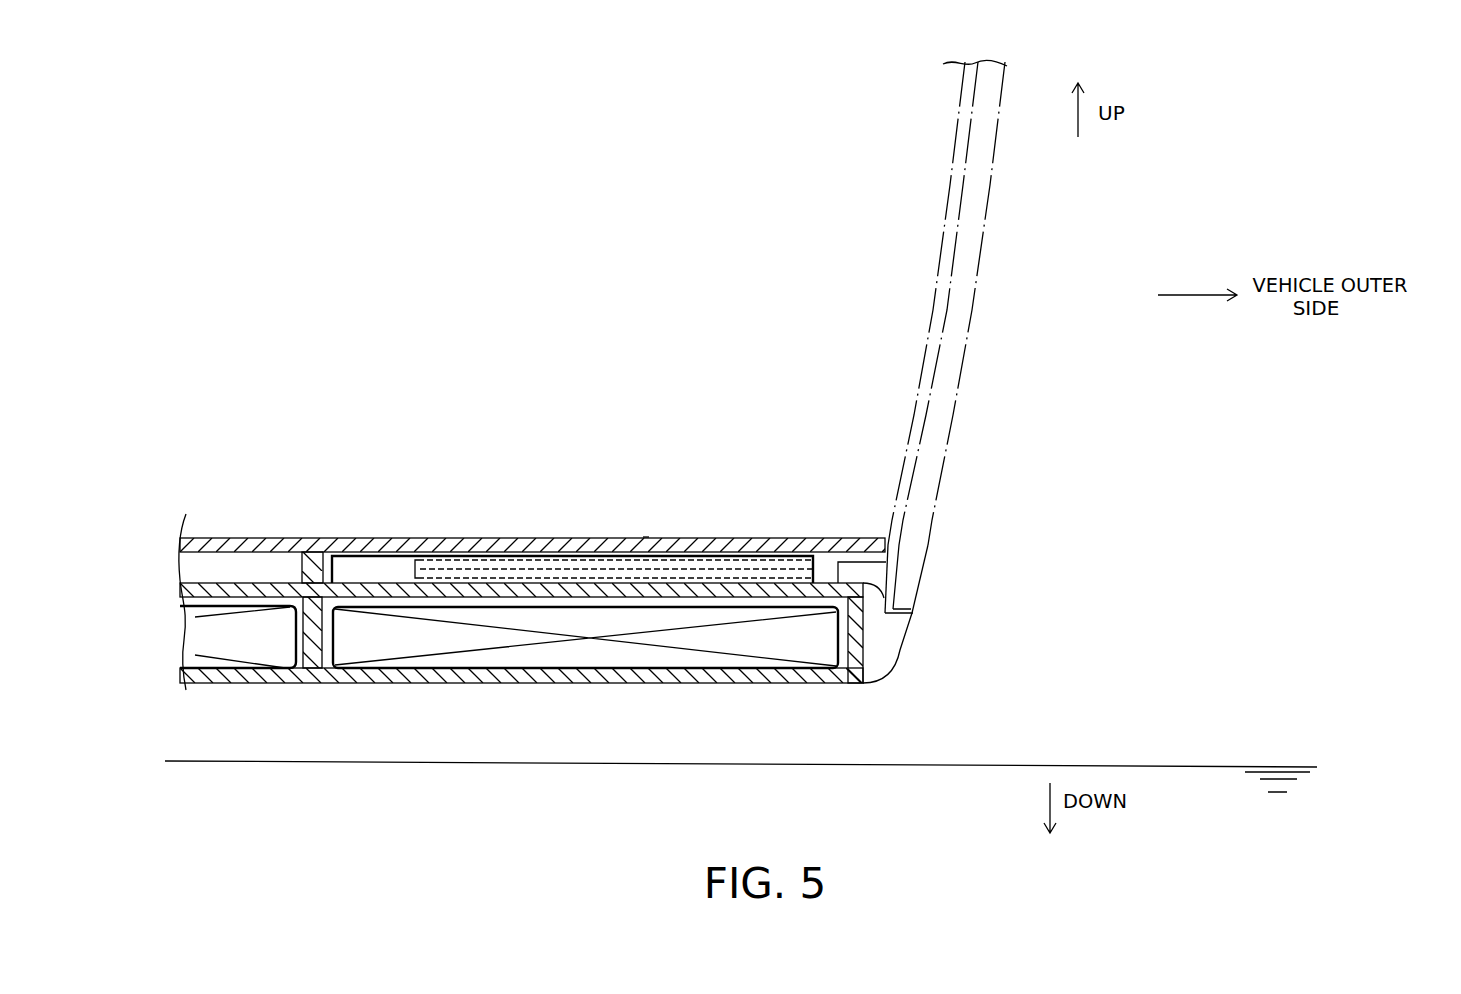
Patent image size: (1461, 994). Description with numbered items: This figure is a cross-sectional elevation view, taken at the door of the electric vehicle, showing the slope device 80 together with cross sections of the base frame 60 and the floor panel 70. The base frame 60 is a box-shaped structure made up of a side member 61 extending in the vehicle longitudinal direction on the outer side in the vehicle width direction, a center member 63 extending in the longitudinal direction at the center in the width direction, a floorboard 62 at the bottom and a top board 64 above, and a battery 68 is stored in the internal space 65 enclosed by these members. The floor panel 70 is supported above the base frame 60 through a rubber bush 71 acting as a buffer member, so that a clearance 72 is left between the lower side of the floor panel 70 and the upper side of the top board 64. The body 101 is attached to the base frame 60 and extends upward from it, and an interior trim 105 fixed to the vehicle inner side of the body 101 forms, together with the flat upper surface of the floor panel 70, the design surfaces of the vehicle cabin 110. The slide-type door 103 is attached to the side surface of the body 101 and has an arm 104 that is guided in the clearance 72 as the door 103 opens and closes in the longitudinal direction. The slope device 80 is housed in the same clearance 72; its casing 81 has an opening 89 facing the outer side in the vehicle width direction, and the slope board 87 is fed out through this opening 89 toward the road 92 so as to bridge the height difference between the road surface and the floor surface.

The vehicle cabin 110 is at (476, 198).
The base frame 60 is at (577, 694).
The side member 61 is at (837, 683).
The floorboard 62 is at (708, 683).
The center member 63 is at (316, 683).
The top board 64 is at (470, 596).
The internal space 65 is at (623, 602).
The battery 68 is at (337, 683).
The floor panel 70 is at (408, 523).
The rubber bush 71 is at (303, 567).
The clearance 72 is at (363, 538).
The slope device 80 is at (418, 557).
The casing 81 is at (613, 569).
The slope board 87 is at (646, 540).
The opening 89 is at (837, 562).
The road 92 is at (1143, 767).
The body 101 is at (893, 652).
The door 103 is at (983, 240).
The arm 104 is at (922, 597).
The interior trim 105 is at (947, 213).